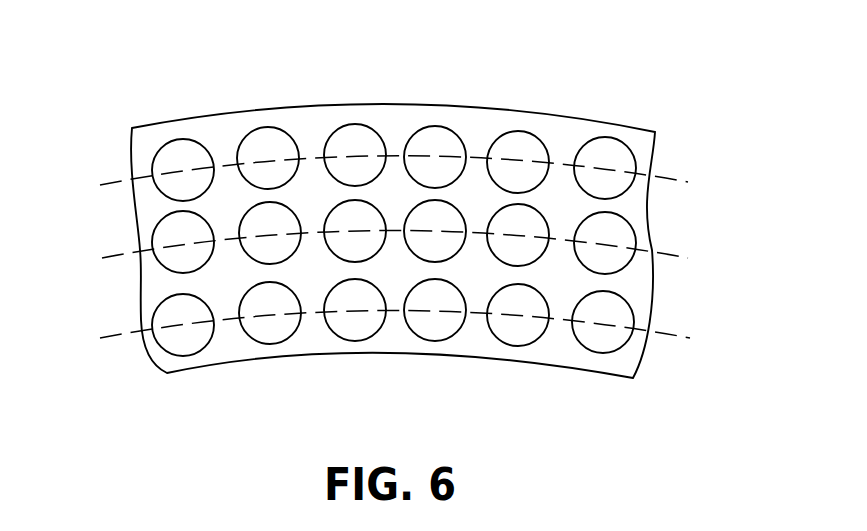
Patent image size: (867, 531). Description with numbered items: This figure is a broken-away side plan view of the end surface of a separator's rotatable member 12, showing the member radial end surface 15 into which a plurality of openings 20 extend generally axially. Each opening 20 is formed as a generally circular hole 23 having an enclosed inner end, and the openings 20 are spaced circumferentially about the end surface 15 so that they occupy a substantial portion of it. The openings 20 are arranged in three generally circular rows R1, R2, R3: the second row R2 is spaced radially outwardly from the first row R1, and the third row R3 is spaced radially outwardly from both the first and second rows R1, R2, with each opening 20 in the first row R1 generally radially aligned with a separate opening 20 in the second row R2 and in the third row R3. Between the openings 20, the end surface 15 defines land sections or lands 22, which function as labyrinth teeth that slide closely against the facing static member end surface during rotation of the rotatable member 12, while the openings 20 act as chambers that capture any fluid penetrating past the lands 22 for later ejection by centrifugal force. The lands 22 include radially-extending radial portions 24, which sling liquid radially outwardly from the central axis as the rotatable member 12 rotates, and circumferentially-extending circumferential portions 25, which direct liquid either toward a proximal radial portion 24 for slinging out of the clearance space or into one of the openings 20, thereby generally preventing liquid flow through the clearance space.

The rotatable member 12 is at (628, 70).
The member radial end surface 15 is at (490, 204).
The openings 20 is at (268, 146).
The lands 22 is at (312, 333).
The circular hole 23 is at (419, 128).
The land radial portions 24 is at (228, 200).
The land circumferential portions 25 is at (272, 200).
The first row of openings R1 is at (672, 330).
The second row of openings R2 is at (672, 257).
The third row of openings R3 is at (675, 180).